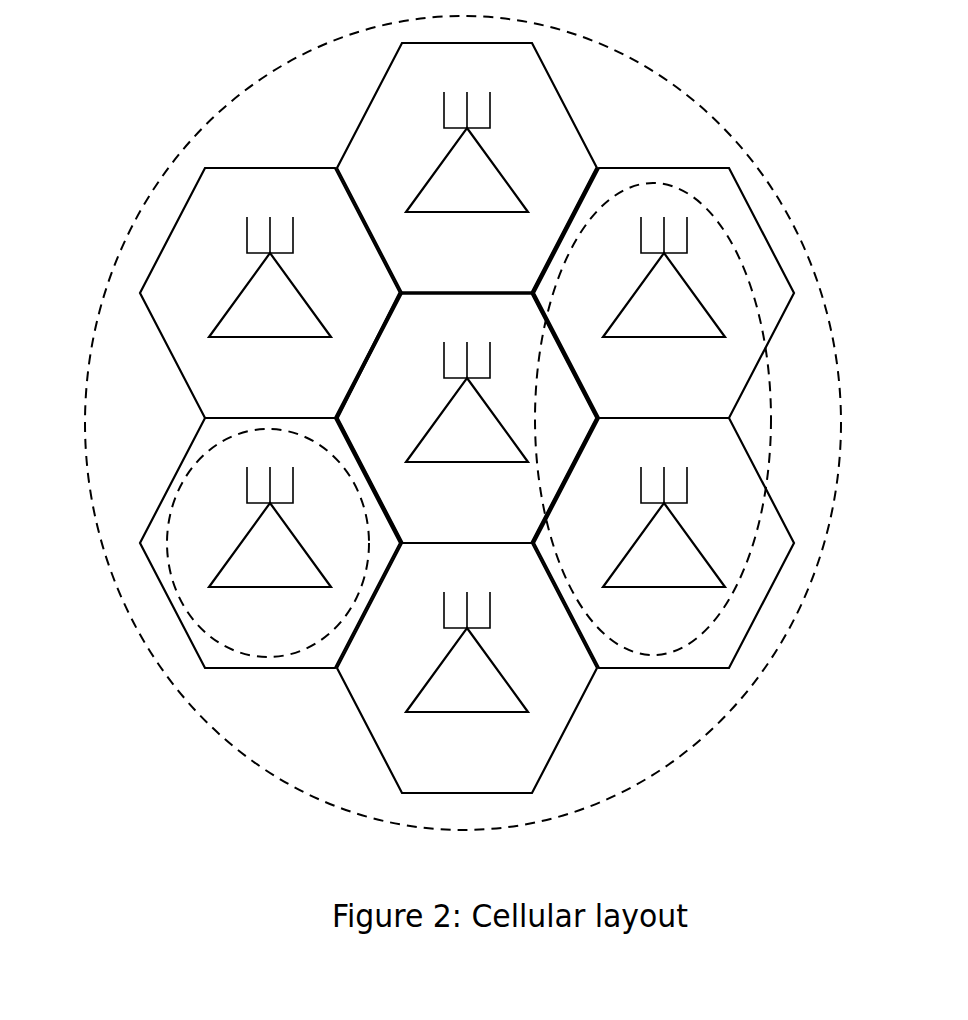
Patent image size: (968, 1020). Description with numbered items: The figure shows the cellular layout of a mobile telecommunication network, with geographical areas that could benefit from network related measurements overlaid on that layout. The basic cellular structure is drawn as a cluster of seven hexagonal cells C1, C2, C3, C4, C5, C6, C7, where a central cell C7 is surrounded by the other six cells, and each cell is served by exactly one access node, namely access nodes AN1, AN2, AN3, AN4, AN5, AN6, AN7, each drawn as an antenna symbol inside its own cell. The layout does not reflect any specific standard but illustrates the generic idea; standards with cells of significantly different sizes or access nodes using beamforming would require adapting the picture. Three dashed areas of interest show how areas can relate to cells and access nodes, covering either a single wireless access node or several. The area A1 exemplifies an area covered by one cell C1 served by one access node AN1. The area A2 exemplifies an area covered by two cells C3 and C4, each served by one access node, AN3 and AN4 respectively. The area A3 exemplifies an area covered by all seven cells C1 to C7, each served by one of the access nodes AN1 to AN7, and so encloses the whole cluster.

The cell C1 is at (270, 543).
The cell C2 is at (467, 668).
The cell C3 is at (664, 543).
The cell C4 is at (664, 293).
The cell C5 is at (467, 168).
The cell C6 is at (270, 293).
The cell C7 is at (467, 418).
The access node AN1 is at (270, 529).
The access node AN2 is at (467, 654).
The access node AN3 is at (664, 529).
The access node AN4 is at (664, 279).
The access node AN5 is at (467, 154).
The access node AN6 is at (270, 279).
The access node AN7 is at (467, 404).
The area A1 is at (200, 623).
The area A2 is at (778, 421).
The area A3 is at (733, 710).